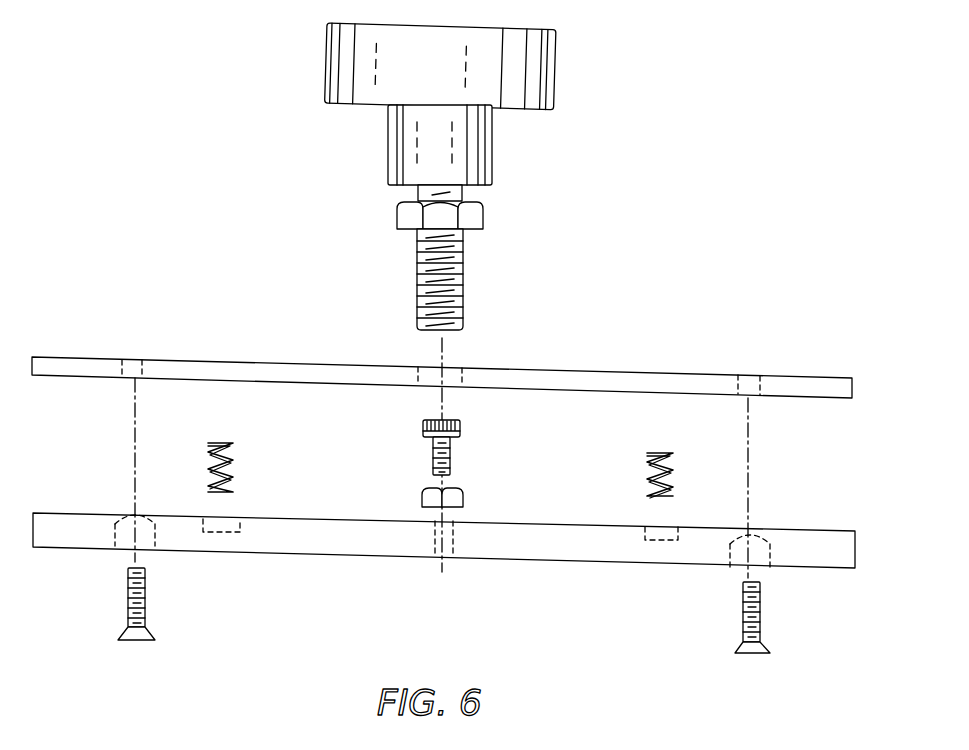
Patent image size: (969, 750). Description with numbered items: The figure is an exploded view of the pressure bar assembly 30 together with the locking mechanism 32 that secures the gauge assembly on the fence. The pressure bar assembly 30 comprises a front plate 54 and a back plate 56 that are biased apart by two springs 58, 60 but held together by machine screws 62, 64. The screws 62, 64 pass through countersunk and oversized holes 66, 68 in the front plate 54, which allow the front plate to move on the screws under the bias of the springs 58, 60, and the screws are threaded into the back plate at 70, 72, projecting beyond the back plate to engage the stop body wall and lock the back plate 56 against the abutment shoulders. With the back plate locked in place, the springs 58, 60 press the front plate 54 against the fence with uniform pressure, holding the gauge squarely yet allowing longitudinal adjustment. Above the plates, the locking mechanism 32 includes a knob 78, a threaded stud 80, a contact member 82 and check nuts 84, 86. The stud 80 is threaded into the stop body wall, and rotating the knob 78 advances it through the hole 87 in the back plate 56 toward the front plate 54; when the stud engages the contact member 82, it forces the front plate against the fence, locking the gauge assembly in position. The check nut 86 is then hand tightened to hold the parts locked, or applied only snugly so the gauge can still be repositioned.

The knob 78 is at (557, 69).
The locking mechanism 32 is at (493, 148).
The check nut 86 is at (397, 215).
The stud 80 is at (463, 240).
The hole 87 is at (458, 370).
The threaded location 72 is at (148, 366).
The threaded location 70 is at (770, 378).
The back plate 56 is at (620, 372).
The contact member 82 is at (460, 434).
The check nut 84 is at (463, 498).
The spring 60 is at (236, 456).
The spring 58 is at (675, 477).
The pressure bar assembly 30 is at (830, 538).
The countersunk oversized hole 68 is at (124, 513).
The countersunk oversized hole 66 is at (761, 531).
The front plate 54 is at (624, 565).
The machine screw 64 is at (156, 633).
The machine screw 62 is at (771, 648).